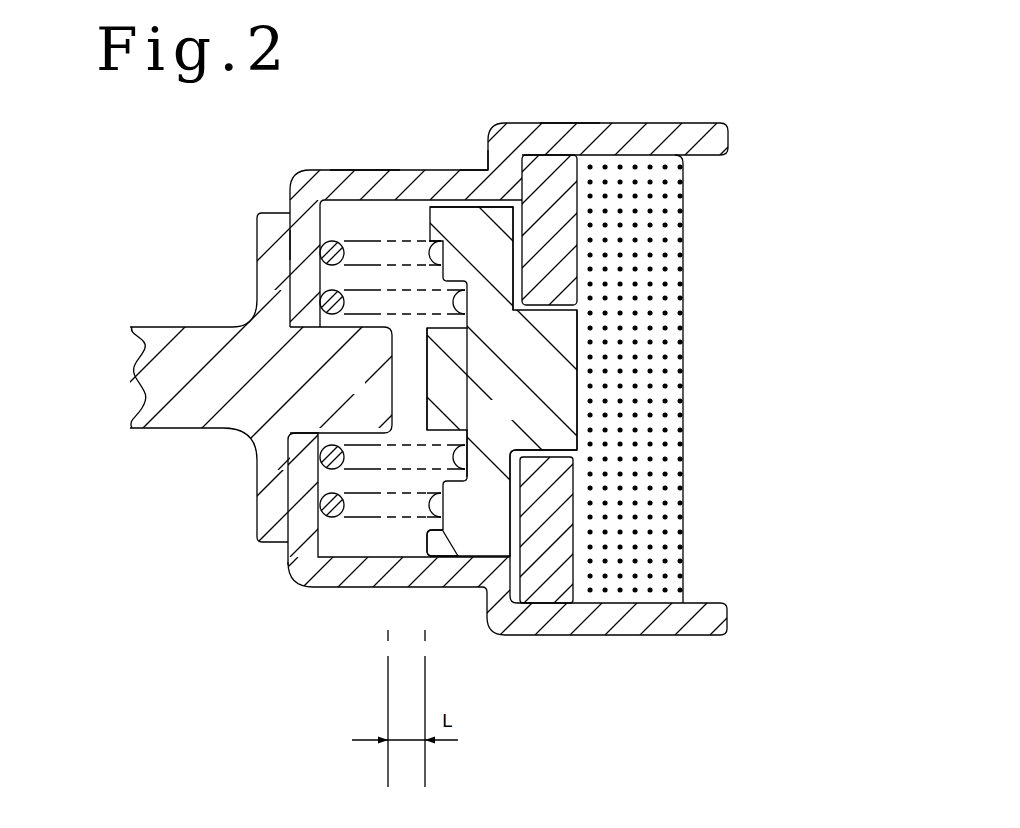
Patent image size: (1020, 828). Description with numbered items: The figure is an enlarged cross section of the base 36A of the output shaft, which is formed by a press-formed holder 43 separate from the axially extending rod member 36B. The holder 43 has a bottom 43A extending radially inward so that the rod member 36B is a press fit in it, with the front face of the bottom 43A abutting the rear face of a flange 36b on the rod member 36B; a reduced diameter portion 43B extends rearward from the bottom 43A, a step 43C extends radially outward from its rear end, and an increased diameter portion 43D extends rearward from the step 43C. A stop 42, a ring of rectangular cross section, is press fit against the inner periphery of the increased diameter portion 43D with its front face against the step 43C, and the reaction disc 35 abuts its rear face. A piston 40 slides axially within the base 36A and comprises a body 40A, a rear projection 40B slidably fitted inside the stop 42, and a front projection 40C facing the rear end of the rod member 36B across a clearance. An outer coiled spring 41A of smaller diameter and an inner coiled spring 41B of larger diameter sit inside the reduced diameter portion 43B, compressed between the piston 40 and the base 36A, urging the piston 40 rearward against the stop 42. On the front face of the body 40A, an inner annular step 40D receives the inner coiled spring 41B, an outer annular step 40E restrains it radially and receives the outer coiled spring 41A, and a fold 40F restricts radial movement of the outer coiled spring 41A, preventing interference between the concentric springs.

The reaction disc 35 is at (675, 425).
The base of the output shaft 36A is at (704, 118).
The rod member 36B is at (143, 327).
The flange 36b is at (272, 274).
The piston 40 is at (580, 442).
The body 40A is at (498, 265).
The rear projection 40B is at (568, 362).
The front projection 40C is at (443, 380).
The inner annular step 40D is at (468, 461).
The outer annular step 40E is at (511, 542).
The fold 40F is at (435, 542).
The outer coiled spring 41A is at (320, 507).
The inner coiled spring 41B is at (320, 458).
The stop 42 is at (578, 210).
The holder 43 is at (633, 123).
The bottom 43A is at (300, 236).
The reduced diameter portion 43B is at (365, 172).
The step 43C is at (488, 142).
The increased diameter portion 43D is at (565, 125).